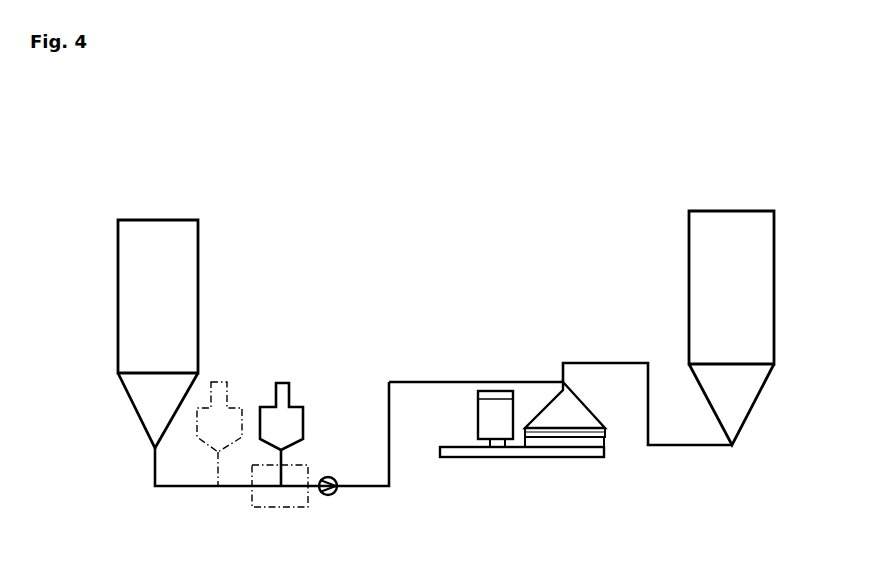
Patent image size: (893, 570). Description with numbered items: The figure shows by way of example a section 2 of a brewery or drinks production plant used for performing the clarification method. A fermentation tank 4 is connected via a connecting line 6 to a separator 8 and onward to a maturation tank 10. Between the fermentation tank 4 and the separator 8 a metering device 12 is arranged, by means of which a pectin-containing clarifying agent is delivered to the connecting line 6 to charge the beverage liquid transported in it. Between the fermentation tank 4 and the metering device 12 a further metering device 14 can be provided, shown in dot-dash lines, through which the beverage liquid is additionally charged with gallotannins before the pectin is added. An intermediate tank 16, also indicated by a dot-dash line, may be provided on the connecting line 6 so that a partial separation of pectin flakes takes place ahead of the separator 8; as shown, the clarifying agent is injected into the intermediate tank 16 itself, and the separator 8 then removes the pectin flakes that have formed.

The section 2 is at (549, 189).
The fermentation tank 4 is at (190, 250).
The connecting line 6 is at (424, 382).
The separator 8 is at (588, 433).
The maturation tank 10 is at (726, 220).
The metering device 12 is at (295, 413).
The further metering device 14 is at (232, 412).
The intermediate tank 16 is at (290, 508).